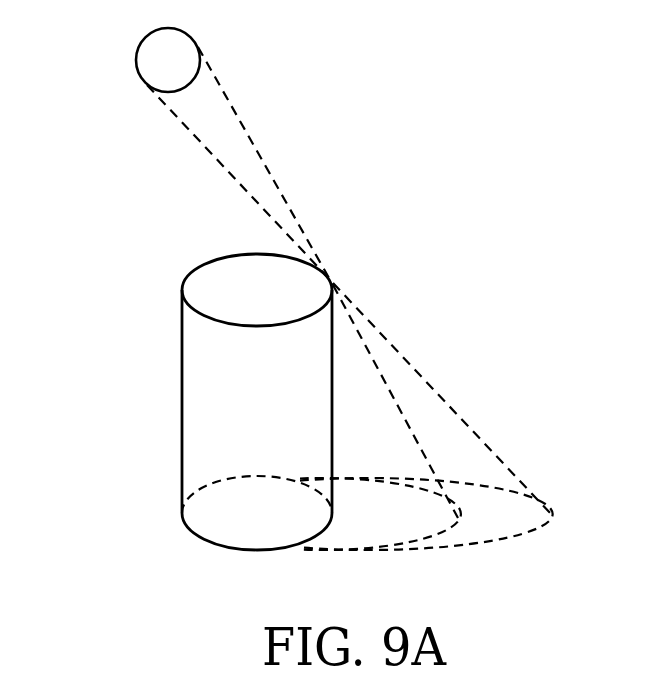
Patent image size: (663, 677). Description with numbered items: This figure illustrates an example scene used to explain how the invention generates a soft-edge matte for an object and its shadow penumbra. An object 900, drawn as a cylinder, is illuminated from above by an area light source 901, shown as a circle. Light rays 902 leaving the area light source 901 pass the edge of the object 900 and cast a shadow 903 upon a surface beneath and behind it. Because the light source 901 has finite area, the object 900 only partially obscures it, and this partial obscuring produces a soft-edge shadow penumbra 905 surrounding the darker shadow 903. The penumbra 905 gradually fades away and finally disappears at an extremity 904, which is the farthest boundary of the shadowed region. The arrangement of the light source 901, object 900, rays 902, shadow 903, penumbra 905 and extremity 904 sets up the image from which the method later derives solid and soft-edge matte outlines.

The object 900 is at (182, 350).
The area light source 901 is at (137, 53).
The light rays 902 is at (254, 138).
The shadow 903 is at (362, 528).
The extremity 904 is at (532, 530).
The soft-edge shadow penumbra 905 is at (483, 522).